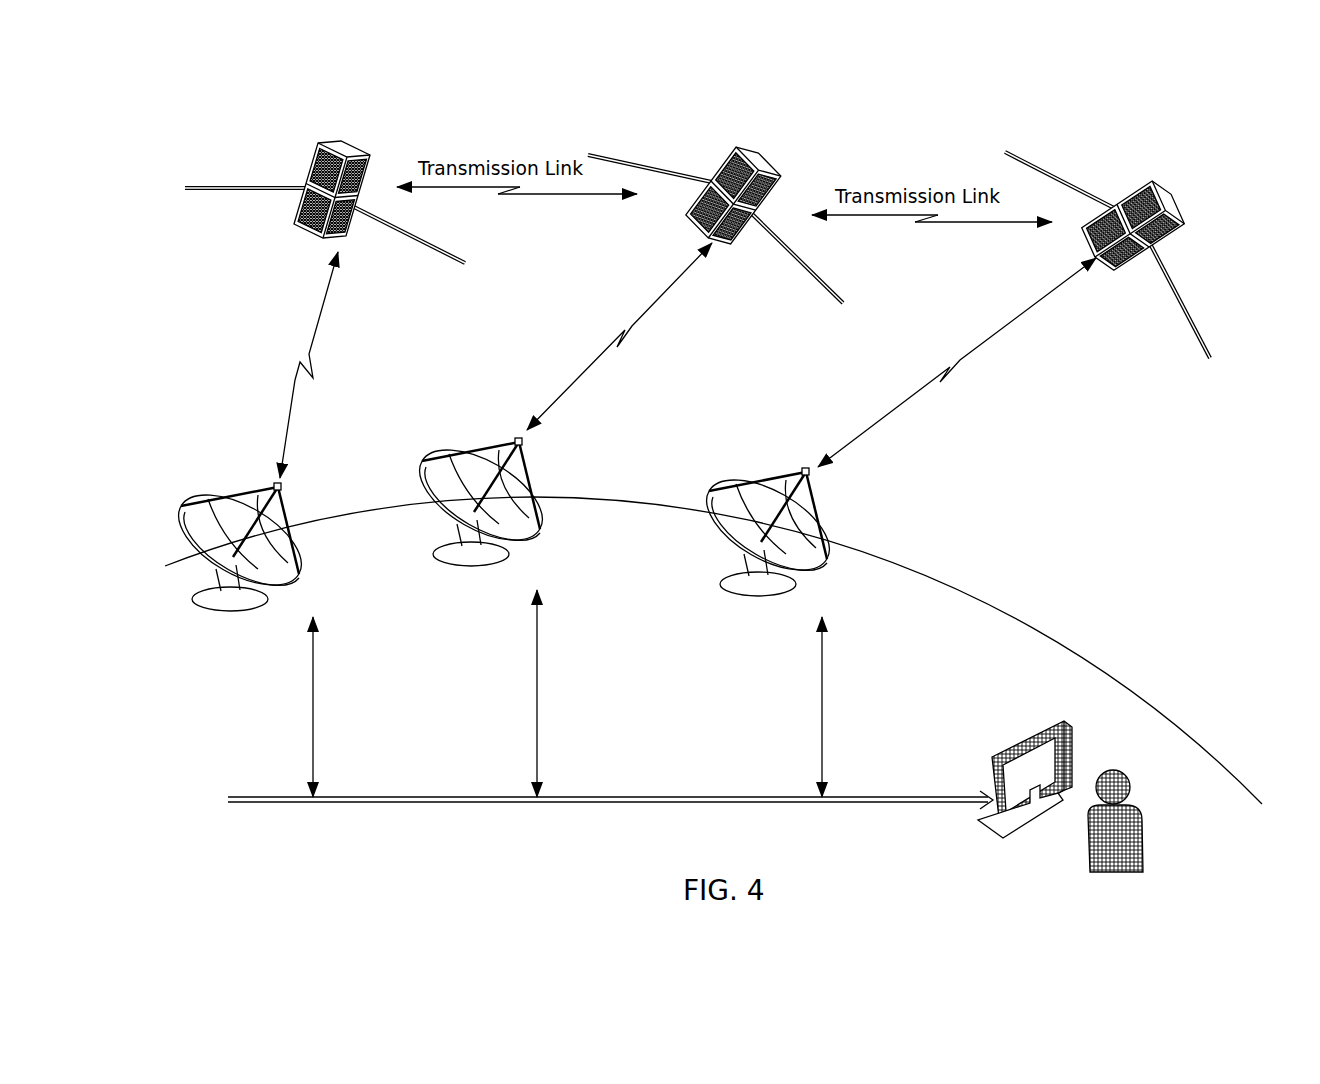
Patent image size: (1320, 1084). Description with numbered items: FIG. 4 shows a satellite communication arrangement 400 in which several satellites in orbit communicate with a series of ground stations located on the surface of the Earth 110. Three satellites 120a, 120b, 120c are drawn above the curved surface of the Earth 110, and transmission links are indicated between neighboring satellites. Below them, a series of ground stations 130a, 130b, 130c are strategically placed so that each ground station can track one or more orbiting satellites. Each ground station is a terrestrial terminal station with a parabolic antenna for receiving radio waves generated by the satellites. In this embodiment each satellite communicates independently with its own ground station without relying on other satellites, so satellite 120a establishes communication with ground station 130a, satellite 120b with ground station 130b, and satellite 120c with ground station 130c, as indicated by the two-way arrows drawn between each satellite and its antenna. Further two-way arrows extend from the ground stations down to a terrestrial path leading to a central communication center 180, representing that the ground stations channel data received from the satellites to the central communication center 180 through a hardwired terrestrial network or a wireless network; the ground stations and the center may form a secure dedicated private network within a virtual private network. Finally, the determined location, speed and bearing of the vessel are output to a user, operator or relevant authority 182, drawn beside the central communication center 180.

The satellite communication system 400 is at (208, 121).
The Earth 110 is at (980, 598).
The satellite 120a is at (338, 143).
The satellite 120b is at (750, 152).
The satellite 120c is at (1146, 180).
The ground station 130a is at (208, 494).
The ground station 130b is at (445, 460).
The ground station 130c is at (722, 493).
The central communication center 180 is at (1010, 737).
The user, operator or relevant authority 182 is at (1110, 770).